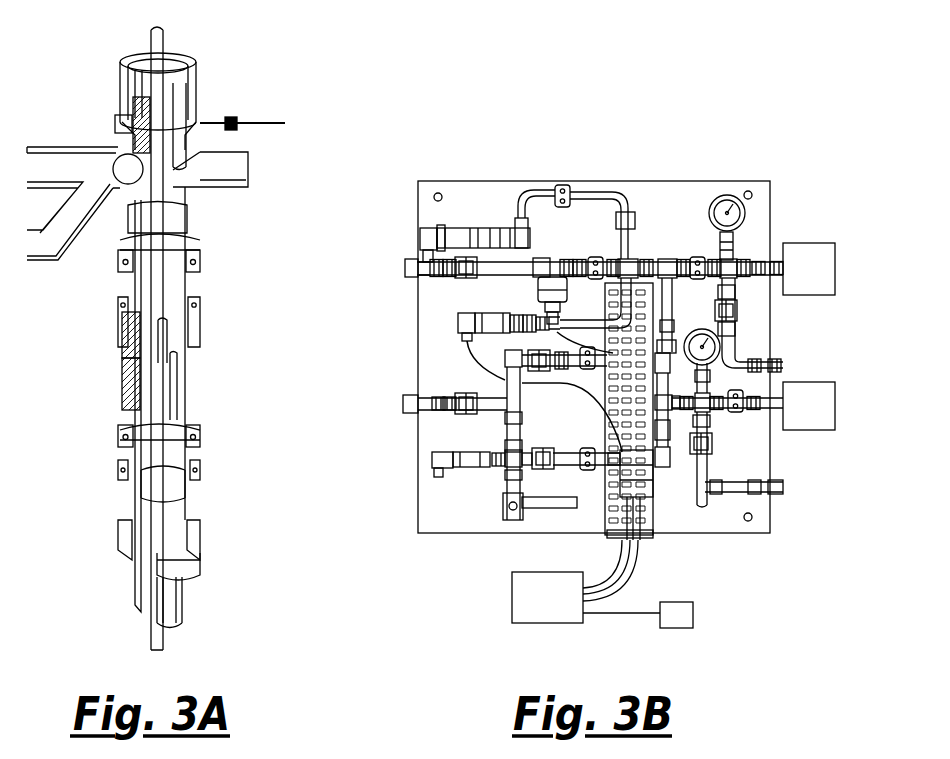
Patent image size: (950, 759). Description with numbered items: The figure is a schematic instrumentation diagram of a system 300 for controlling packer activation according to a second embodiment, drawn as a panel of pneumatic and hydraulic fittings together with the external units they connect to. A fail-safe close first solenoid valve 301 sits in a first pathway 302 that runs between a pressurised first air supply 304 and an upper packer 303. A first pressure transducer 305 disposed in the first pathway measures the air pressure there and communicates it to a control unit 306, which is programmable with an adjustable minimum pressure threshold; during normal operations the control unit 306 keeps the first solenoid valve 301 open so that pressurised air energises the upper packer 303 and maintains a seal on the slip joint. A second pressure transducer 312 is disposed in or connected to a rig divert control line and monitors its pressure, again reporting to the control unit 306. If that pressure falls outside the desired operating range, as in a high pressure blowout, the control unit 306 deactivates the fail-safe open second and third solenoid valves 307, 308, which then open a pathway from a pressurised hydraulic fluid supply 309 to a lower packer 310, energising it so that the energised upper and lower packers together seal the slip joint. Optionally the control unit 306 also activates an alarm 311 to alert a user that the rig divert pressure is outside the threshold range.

In FIG. 3A, the system 300 is at (262, 210).
In FIG. 3B, the system 300 is at (730, 108).
In FIG. 3B, the first solenoid valve 301 is at (557, 278).
In FIG. 3B, the first pathway 302 is at (586, 260).
In FIG. 3A, the upper packer 303 is at (128, 348).
In FIG. 3B, the upper packer 303 is at (807, 250).
In FIG. 3A, the first air supply 304 is at (130, 378).
In FIG. 3B, the first air supply 304 is at (410, 268).
In FIG. 3A, the first pressure transducer 305 is at (248, 123).
In FIG. 3B, the first pressure transducer 305 is at (460, 322).
In FIG. 3B, the control unit 306 is at (527, 592).
In FIG. 3B, the second solenoid valve 307 is at (680, 378).
In FIG. 3B, the third solenoid valve 308 is at (645, 487).
In FIG. 3B, the pressurised hydraulic fluid supply 309 is at (410, 405).
In FIG. 3B, the lower packer 310 is at (805, 422).
In FIG. 3B, the alarm 311 is at (685, 614).
In FIG. 3B, the second pressure transducer 312 is at (433, 463).